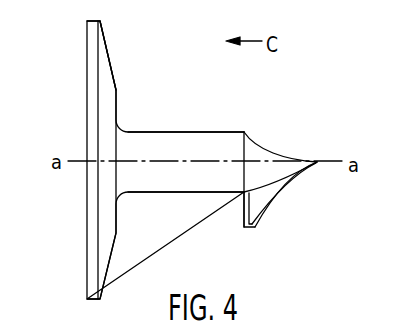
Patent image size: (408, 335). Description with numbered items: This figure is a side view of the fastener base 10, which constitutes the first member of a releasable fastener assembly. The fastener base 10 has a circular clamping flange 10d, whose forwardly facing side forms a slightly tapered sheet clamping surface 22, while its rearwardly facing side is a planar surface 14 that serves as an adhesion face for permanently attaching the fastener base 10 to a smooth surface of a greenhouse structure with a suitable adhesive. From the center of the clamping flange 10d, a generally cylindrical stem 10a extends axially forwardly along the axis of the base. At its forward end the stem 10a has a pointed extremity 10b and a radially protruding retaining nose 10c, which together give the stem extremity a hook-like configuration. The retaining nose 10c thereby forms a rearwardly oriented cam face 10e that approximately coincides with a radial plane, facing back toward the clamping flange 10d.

The fastener base 10 is at (166, 122).
The stem 10a is at (156, 183).
The pointed extremity 10b is at (270, 158).
The retaining nose 10c is at (262, 200).
The clamping flange 10d is at (103, 140).
The cam face 10e is at (243, 208).
The planar surface 14 is at (86, 270).
The sheet clamping surface 22 is at (100, 68).